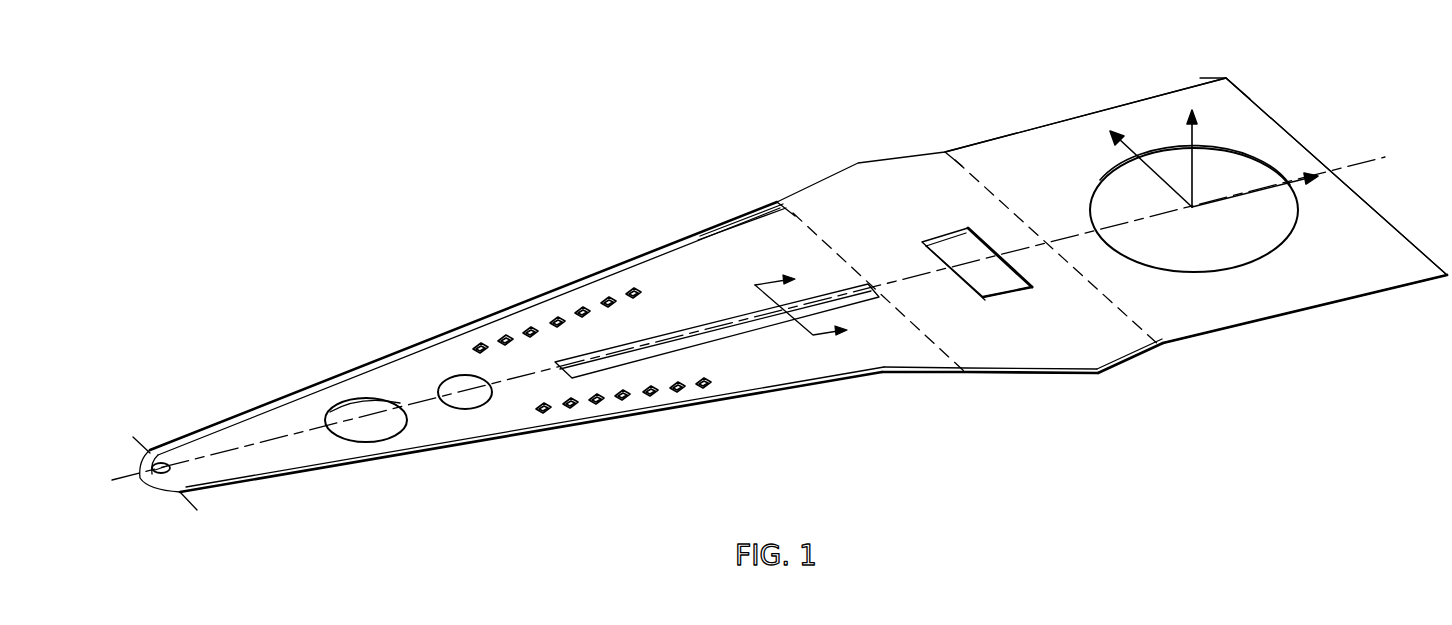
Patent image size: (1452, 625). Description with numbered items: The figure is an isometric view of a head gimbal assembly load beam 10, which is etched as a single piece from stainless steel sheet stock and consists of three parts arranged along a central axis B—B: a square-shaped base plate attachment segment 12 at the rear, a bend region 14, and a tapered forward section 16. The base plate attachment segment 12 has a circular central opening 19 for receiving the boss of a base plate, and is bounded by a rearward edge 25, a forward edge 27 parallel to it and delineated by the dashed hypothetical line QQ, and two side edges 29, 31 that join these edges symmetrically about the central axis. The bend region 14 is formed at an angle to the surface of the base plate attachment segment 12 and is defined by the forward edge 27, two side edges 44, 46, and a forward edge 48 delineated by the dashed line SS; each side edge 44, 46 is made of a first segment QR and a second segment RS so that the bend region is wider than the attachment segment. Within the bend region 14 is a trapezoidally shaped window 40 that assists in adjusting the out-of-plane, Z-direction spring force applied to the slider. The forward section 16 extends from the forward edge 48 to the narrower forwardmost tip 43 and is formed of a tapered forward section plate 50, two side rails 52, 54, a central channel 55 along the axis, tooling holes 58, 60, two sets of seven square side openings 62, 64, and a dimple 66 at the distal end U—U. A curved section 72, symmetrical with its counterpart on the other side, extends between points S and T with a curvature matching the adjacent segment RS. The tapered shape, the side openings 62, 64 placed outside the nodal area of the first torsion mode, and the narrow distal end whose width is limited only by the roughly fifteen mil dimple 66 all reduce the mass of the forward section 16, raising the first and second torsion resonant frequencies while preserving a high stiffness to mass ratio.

The load beam 10 is at (770, 279).
The base plate attachment segment 12 is at (1349, 296).
The bend region 14 is at (1041, 378).
The forward section 16 is at (533, 448).
The circular central opening 19 is at (1155, 150).
The rearward edge 25 is at (1392, 224).
The forward edge 27 is at (968, 160).
The side edge 29 is at (1408, 292).
The side edge 31 is at (1190, 82).
The window 40 is at (1007, 296).
The forwardmost tip 43 is at (140, 478).
The side edge 44 is at (1140, 370).
The side edge 46 is at (903, 140).
The forward edge 48 is at (930, 358).
The tapered forward section plate 50 is at (408, 384).
The side rail 52 is at (752, 396).
The side rail 54 is at (503, 315).
The central channel 55 is at (780, 360).
The tooling hole 58 is at (378, 442).
The tooling hole 60 is at (470, 410).
The side openings 62 is at (660, 398).
The side openings 64 is at (606, 305).
The dimple 66 is at (158, 462).
The curved section 72 is at (760, 216).